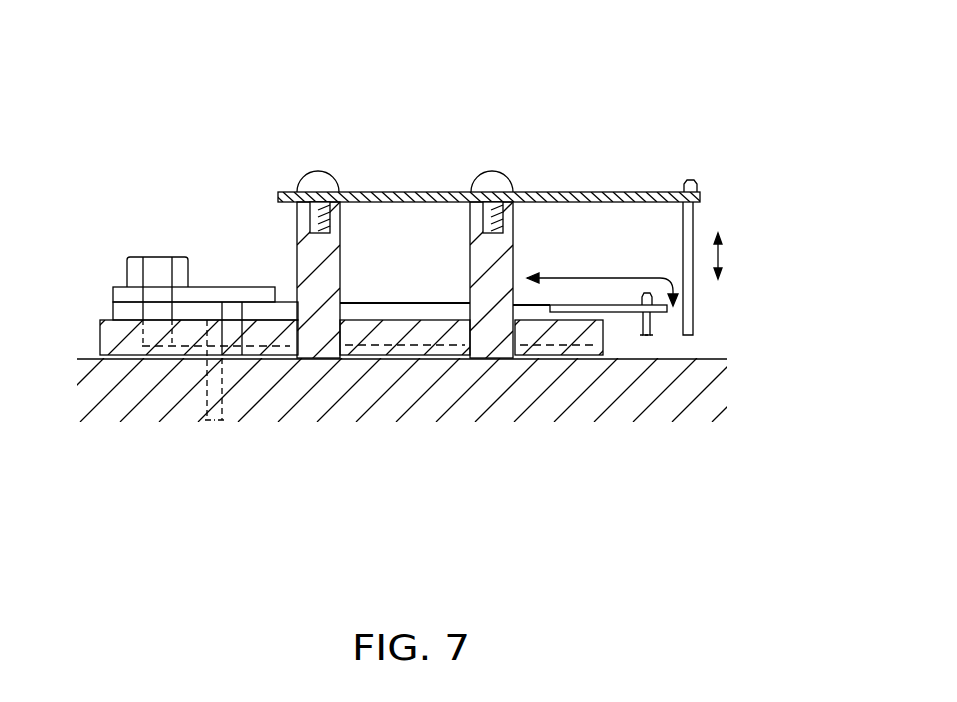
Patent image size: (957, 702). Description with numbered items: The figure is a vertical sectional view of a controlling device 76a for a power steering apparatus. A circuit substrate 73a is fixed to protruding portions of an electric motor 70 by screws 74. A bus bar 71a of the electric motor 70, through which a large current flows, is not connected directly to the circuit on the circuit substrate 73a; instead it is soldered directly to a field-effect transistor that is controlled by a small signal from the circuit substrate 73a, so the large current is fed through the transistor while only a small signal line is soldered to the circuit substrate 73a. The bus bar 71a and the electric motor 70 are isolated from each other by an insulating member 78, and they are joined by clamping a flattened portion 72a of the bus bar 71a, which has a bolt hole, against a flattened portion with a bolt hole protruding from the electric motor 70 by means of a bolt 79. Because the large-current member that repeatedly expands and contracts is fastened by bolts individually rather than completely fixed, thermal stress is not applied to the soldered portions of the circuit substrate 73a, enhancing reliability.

The electric motor 70 is at (553, 405).
The bus bar 71a is at (257, 308).
The flattened portion 72a is at (111, 295).
The circuit substrate 73a is at (385, 194).
The screw 74 is at (316, 190).
The controlling device 76a is at (483, 101).
The insulating member 78 is at (195, 338).
The bolt 79 is at (133, 257).